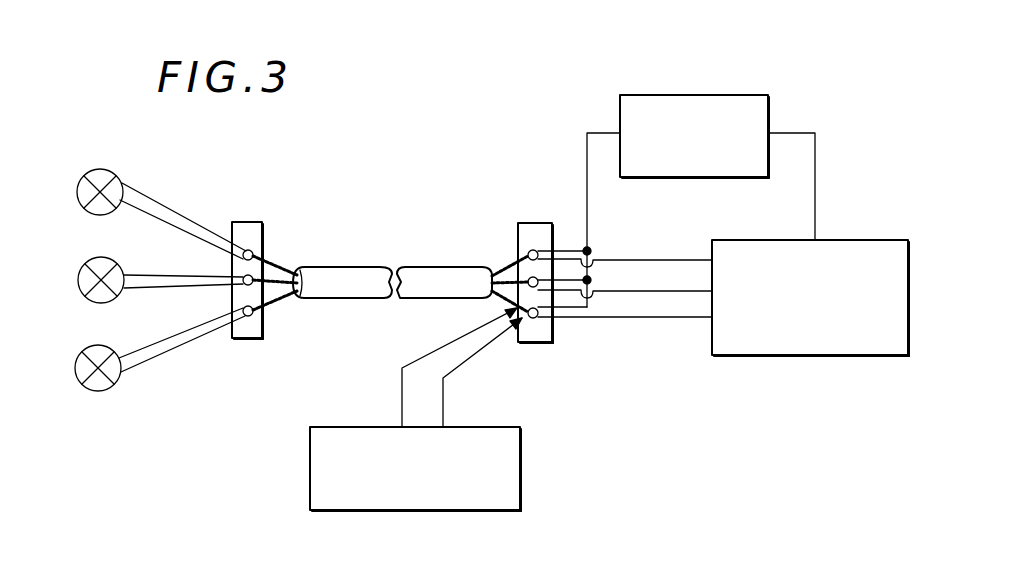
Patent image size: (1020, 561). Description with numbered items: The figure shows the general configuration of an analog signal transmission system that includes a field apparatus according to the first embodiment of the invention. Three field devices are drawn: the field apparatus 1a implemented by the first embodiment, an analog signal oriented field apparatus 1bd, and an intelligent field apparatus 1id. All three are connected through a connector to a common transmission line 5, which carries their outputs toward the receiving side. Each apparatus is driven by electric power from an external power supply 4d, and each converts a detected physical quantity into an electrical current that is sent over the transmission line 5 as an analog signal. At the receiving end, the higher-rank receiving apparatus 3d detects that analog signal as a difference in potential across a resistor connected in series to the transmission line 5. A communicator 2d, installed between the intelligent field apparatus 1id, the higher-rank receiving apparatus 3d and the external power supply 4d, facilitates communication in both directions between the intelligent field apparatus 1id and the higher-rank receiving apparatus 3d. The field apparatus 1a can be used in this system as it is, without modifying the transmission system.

The field apparatus 1a is at (78, 186).
The analog signal oriented field apparatus 1bd is at (82, 268).
The intelligent field apparatus 1id is at (78, 356).
The transmission line 5 is at (343, 267).
The external power supply 4d is at (770, 113).
The higher-rank receiving apparatus 3d is at (788, 357).
The communicator 2d is at (521, 476).